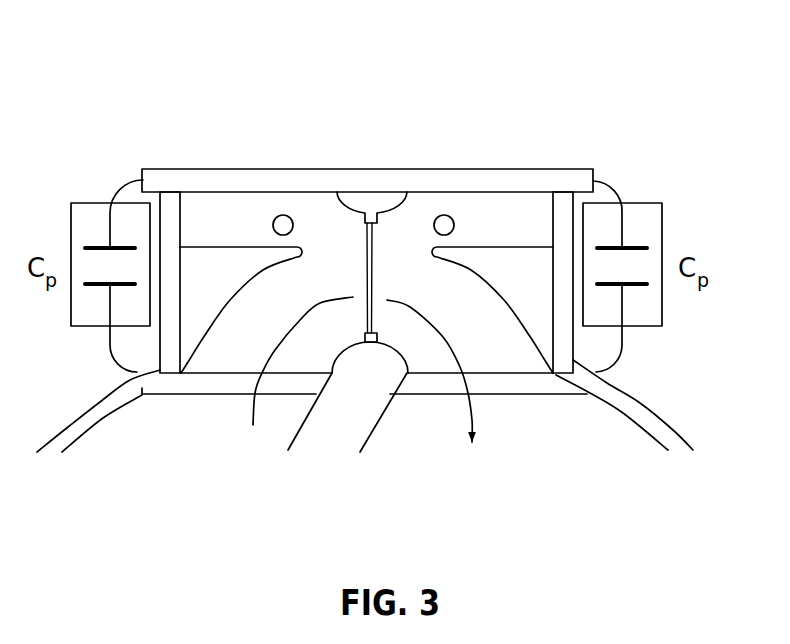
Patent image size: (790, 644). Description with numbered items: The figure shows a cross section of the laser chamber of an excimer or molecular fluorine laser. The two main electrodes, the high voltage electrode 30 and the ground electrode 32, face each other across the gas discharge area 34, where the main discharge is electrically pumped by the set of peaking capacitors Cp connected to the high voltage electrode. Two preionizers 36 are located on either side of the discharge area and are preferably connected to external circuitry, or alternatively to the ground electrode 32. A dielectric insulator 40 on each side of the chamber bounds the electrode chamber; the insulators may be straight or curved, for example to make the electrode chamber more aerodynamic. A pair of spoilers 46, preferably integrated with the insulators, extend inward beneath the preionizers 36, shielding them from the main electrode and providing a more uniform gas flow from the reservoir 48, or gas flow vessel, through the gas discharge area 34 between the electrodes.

The high voltage electrode 30 is at (378, 207).
The ground electrode 32 is at (361, 370).
The gas discharge area 34 is at (360, 274).
The preionizers 36 is at (444, 213).
The dielectric insulator 40 is at (563, 214).
The spoilers 46 is at (515, 272).
The reservoir (gas flow vessel) 48 is at (643, 417).